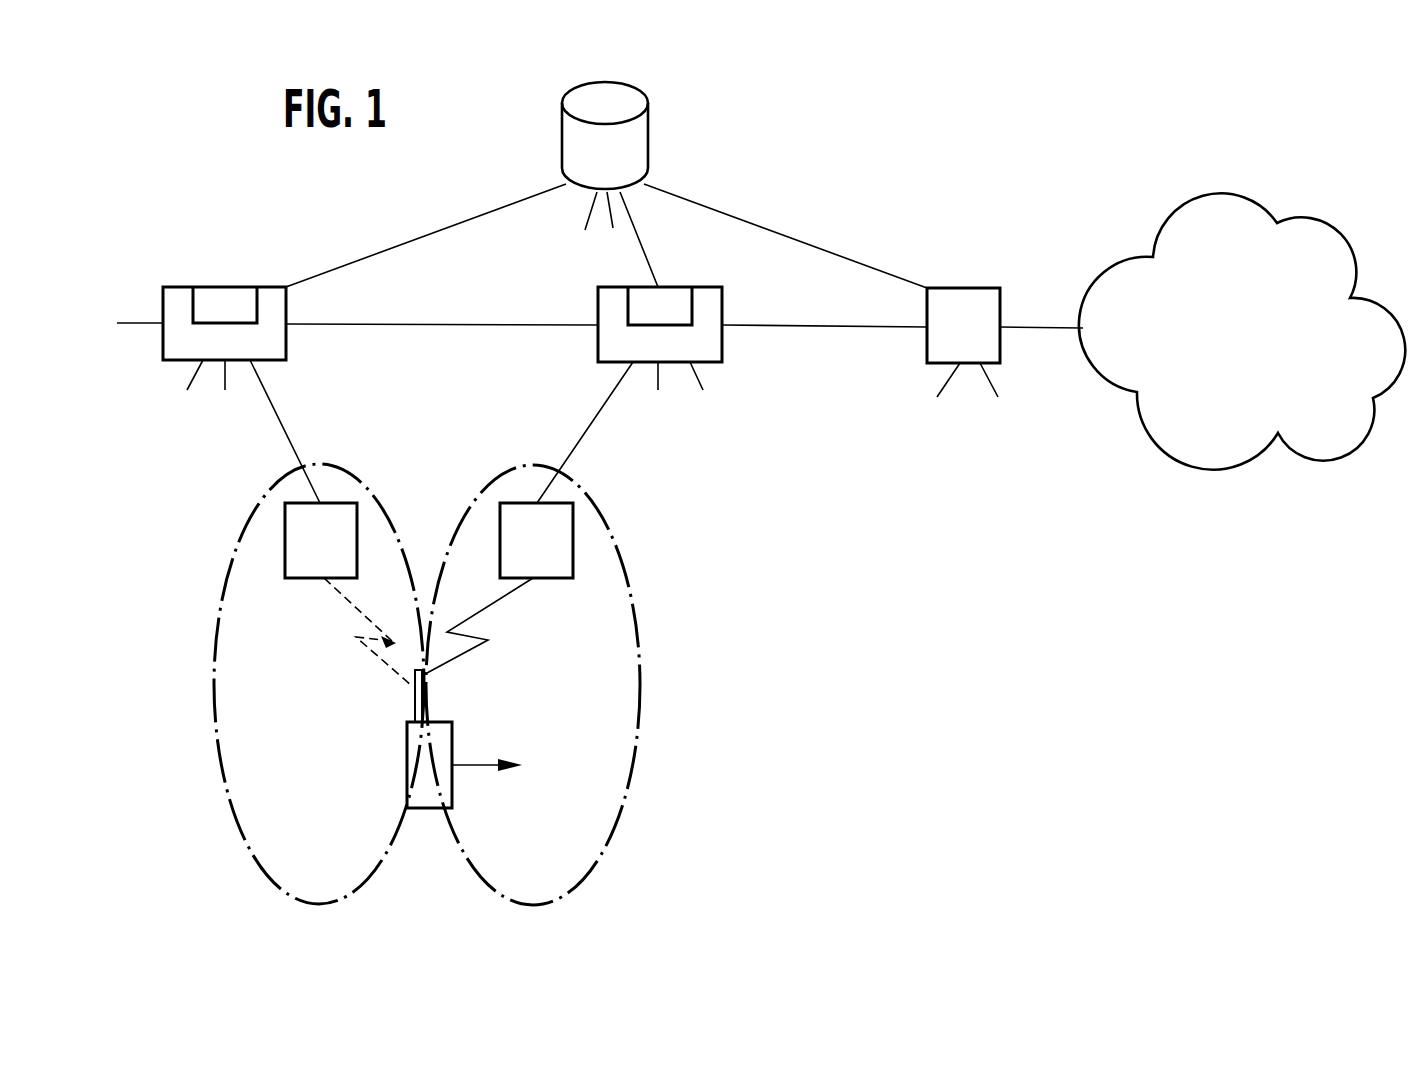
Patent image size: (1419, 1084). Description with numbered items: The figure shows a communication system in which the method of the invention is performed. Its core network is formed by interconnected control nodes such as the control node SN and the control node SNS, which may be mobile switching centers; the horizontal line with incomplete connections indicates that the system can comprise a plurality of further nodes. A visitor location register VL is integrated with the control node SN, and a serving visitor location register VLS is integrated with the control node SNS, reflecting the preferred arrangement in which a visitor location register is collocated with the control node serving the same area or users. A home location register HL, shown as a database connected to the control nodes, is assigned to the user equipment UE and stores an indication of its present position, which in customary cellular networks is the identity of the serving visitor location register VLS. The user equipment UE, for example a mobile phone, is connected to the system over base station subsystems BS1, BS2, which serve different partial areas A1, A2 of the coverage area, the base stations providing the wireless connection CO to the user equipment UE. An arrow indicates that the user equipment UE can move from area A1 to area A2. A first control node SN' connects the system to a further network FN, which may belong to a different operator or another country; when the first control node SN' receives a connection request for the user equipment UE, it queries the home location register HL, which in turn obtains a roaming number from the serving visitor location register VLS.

The home location register HL is at (637, 140).
The control node SN is at (219, 381).
The visitor location register VL is at (210, 293).
The control node SNS is at (713, 307).
The serving visitor location register VLS is at (677, 297).
The first control node SN' is at (965, 313).
The further network FN is at (1213, 205).
The base station subsystem BS1 is at (303, 539).
The base station subsystem BS2 is at (558, 540).
The wireless connection CO is at (517, 592).
The user equipment UE is at (413, 760).
The partial area A1 is at (259, 828).
The partial area A2 is at (585, 853).